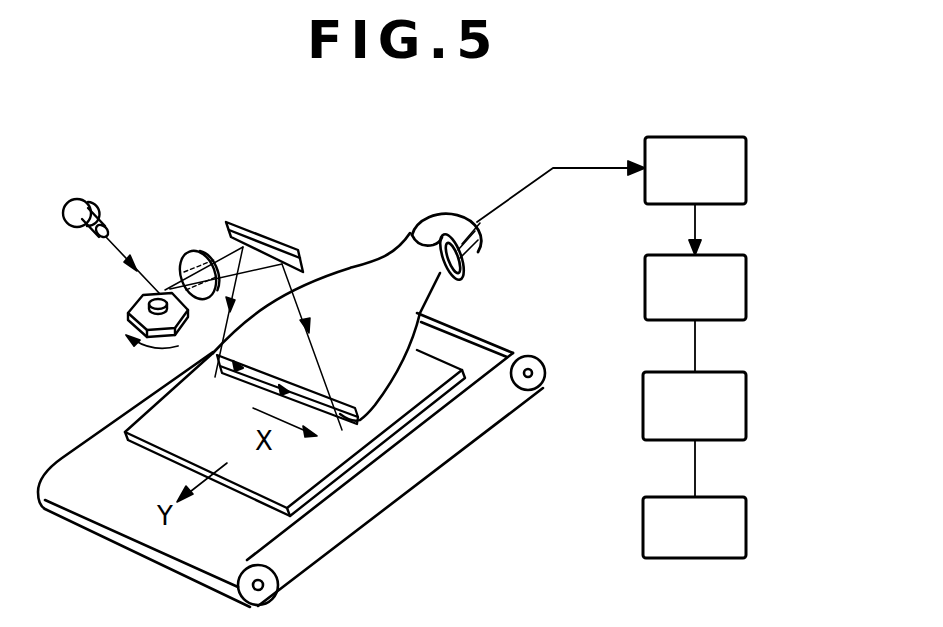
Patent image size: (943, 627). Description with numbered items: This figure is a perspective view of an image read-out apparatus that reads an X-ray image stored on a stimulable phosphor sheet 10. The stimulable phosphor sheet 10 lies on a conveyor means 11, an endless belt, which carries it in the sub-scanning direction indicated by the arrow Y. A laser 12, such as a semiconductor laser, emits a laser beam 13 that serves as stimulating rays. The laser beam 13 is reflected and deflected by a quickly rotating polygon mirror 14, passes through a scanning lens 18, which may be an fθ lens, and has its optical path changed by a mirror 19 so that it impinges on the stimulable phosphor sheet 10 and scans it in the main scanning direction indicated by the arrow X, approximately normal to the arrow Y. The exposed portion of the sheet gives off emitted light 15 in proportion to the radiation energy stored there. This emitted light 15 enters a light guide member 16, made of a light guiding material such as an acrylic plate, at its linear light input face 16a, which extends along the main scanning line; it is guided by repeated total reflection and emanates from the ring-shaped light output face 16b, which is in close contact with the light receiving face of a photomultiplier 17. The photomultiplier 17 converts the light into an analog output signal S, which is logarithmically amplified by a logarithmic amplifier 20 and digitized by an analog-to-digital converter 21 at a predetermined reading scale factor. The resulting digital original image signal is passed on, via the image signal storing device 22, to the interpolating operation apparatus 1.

The interpolating operation apparatus 1 is at (642, 533).
The stimulable phosphor sheet 10 is at (330, 430).
The conveyor means 11 is at (293, 533).
The laser 12 is at (104, 212).
The laser beam 13 is at (128, 252).
The rotating polygon mirror 14 is at (128, 312).
The emitted light 15 is at (238, 375).
The light guide member 16 is at (360, 265).
The light input face 16a is at (360, 420).
The light output face 16b is at (460, 258).
The photomultiplier 17 is at (442, 217).
The scanning lens 18 is at (200, 248).
The mirror 19 is at (268, 238).
The logarithmic amplifier 20 is at (708, 137).
The analog-to-digital converter 21 is at (650, 253).
The image signal storing device 22 is at (642, 408).
The analog output signal S is at (573, 162).